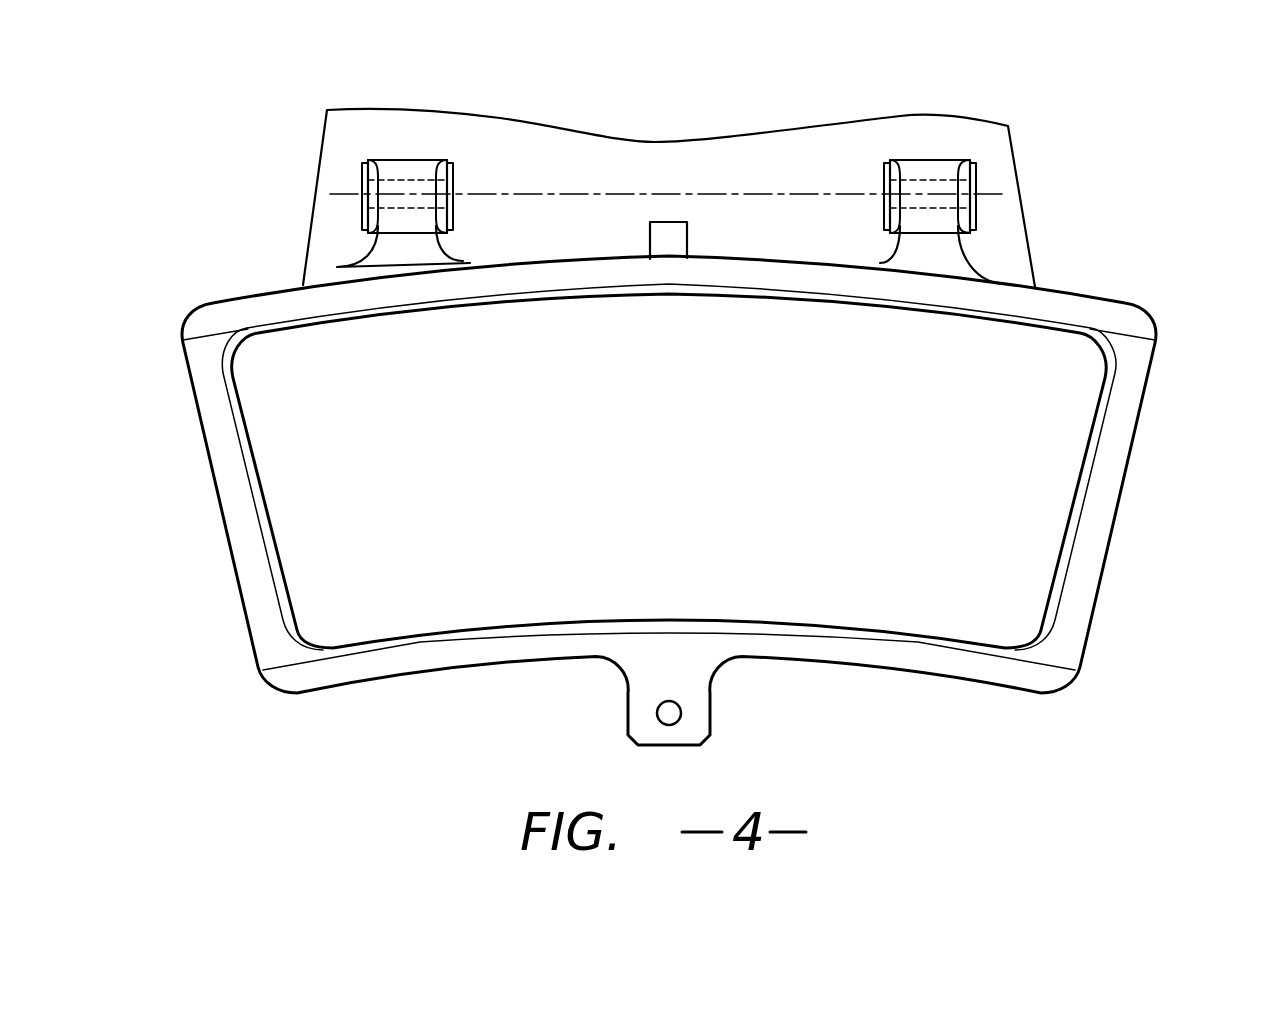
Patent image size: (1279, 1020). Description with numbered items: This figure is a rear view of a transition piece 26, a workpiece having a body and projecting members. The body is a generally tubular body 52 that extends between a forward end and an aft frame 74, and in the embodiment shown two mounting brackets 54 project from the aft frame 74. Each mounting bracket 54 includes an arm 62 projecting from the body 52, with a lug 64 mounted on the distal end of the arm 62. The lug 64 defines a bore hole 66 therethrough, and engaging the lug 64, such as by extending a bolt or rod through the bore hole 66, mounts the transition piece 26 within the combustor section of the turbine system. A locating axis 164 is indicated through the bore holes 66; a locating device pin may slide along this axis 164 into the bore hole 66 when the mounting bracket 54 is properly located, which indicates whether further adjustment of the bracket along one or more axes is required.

The transition piece 26 is at (711, 397).
The body 52 is at (782, 150).
The mounting bracket 54 is at (403, 138).
The arm 62 is at (405, 243).
The lug 64 is at (458, 166).
The bore hole 66 is at (472, 187).
The aft frame 74 is at (1152, 442).
The locating axis 164 is at (668, 193).